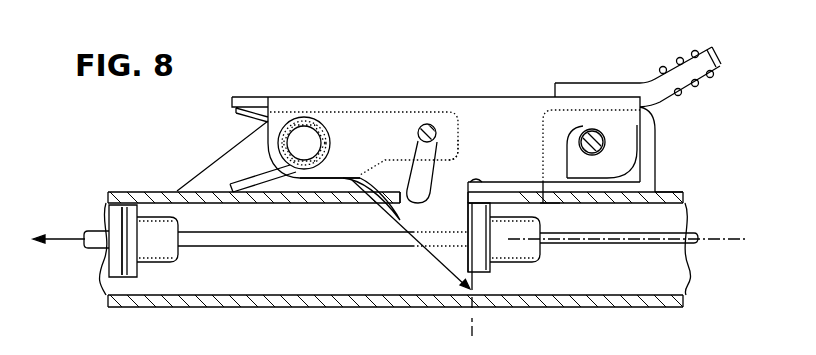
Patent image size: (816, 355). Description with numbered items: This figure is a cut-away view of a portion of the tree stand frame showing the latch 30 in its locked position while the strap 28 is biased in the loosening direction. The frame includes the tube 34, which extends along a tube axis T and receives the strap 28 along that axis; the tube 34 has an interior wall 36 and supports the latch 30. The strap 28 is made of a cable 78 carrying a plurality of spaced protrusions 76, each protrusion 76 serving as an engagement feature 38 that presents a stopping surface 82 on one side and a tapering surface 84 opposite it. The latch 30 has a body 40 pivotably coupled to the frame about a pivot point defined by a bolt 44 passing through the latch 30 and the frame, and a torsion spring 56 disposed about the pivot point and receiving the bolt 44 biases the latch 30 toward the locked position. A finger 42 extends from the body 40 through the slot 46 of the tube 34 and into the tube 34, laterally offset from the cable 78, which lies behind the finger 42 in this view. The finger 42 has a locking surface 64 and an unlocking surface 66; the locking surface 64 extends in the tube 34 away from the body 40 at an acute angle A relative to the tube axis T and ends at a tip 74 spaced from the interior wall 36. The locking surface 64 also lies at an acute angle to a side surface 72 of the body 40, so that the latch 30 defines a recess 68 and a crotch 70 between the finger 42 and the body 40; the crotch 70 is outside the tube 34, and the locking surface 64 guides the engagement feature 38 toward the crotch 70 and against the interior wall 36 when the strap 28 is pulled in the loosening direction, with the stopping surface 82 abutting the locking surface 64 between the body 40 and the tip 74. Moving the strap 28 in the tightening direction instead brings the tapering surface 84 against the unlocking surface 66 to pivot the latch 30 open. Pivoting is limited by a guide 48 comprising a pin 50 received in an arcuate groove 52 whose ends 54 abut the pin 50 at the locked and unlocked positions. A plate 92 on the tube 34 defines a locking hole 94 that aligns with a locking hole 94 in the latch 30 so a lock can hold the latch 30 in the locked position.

The strap 28 is at (690, 232).
The latch 30 is at (507, 110).
The tube 34 is at (680, 191).
The interior wall 36 is at (667, 187).
The engagement feature 38 is at (350, 269).
The protrusion 76 is at (110, 278).
The body 40 is at (530, 110).
The finger 42 is at (350, 178).
The bolt 44 is at (302, 142).
The slot 46 is at (512, 186).
The guide 48 is at (474, 150).
The pin 50 is at (417, 130).
The groove 52 is at (452, 157).
The end 54 is at (427, 124).
The spring 56 is at (238, 180).
The locking surface 64 is at (463, 201).
The unlocking surface 66 is at (400, 221).
The recess 68 is at (552, 205).
The crotch 70 is at (483, 183).
The side surface 72 is at (580, 138).
The tip 74 is at (468, 292).
The cable 78 is at (248, 248).
The stopping surface 82 is at (100, 222).
The tapering surface 84 is at (132, 222).
The plate 92 is at (647, 163).
The locking hole 94 is at (605, 136).
The angle A is at (478, 287).
The tube axis T is at (757, 243).